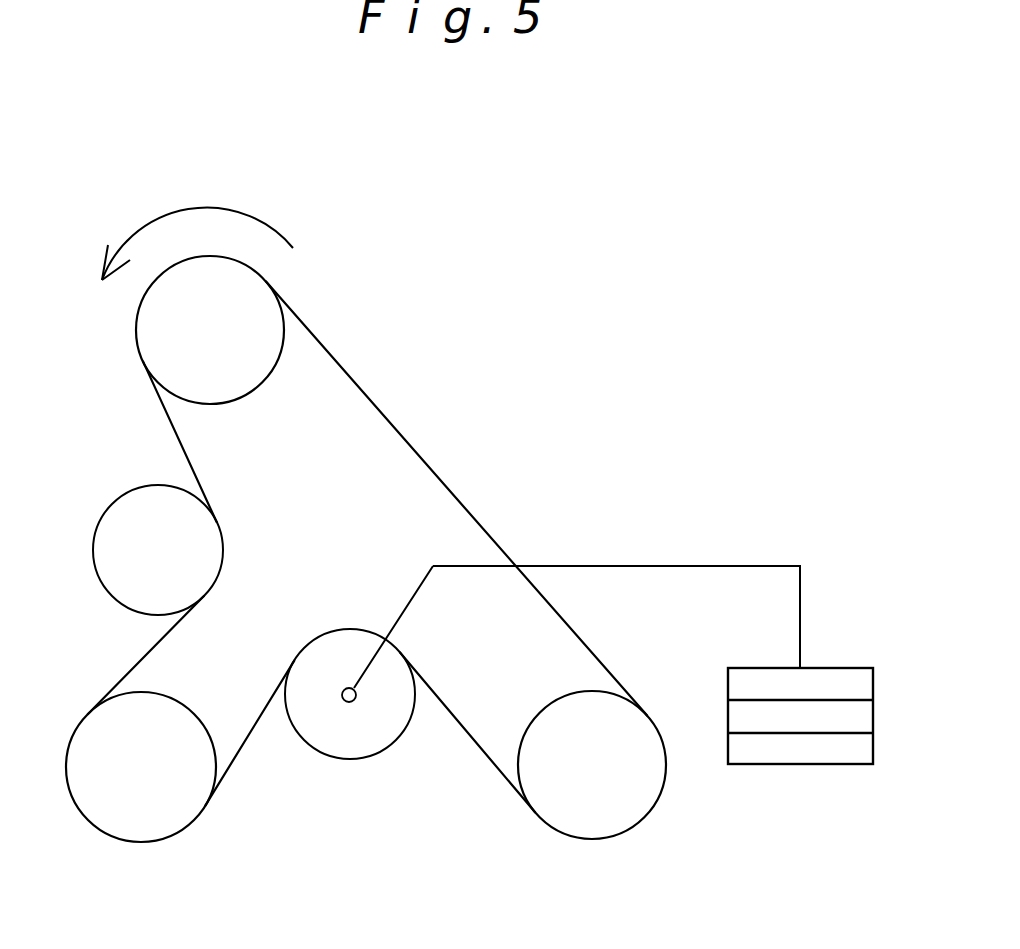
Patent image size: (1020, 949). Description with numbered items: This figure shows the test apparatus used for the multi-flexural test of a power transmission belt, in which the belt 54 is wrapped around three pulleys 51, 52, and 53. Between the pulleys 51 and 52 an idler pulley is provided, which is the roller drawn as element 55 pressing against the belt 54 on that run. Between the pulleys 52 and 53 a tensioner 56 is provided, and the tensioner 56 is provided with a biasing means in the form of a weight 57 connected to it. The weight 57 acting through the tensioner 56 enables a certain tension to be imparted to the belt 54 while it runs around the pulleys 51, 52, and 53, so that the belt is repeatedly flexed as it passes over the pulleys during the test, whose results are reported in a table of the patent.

The pulley 51 is at (155, 342).
The pulley 52 is at (142, 825).
The pulley 53 is at (590, 825).
The belt 54 is at (407, 433).
The tension roller 55 is at (122, 580).
The tensioner 56 is at (346, 747).
The weight 57 is at (802, 757).